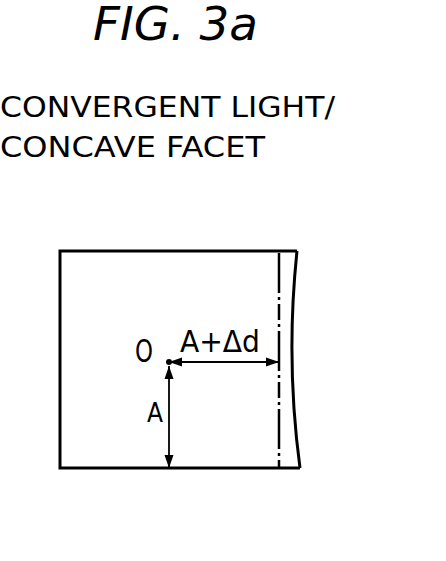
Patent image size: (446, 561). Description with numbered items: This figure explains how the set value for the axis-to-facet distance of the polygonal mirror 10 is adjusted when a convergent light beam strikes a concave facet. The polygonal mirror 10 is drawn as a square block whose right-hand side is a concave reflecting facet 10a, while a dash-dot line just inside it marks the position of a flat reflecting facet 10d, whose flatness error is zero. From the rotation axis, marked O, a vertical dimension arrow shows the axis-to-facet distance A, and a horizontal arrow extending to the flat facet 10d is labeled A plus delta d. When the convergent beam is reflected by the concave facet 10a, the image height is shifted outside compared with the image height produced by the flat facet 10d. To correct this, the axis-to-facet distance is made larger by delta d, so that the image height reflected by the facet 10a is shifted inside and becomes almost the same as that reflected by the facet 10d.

The polygonal mirror 10 is at (223, 361).
The reflecting facet 10a is at (294, 314).
The reflecting facet 10d is at (262, 468).